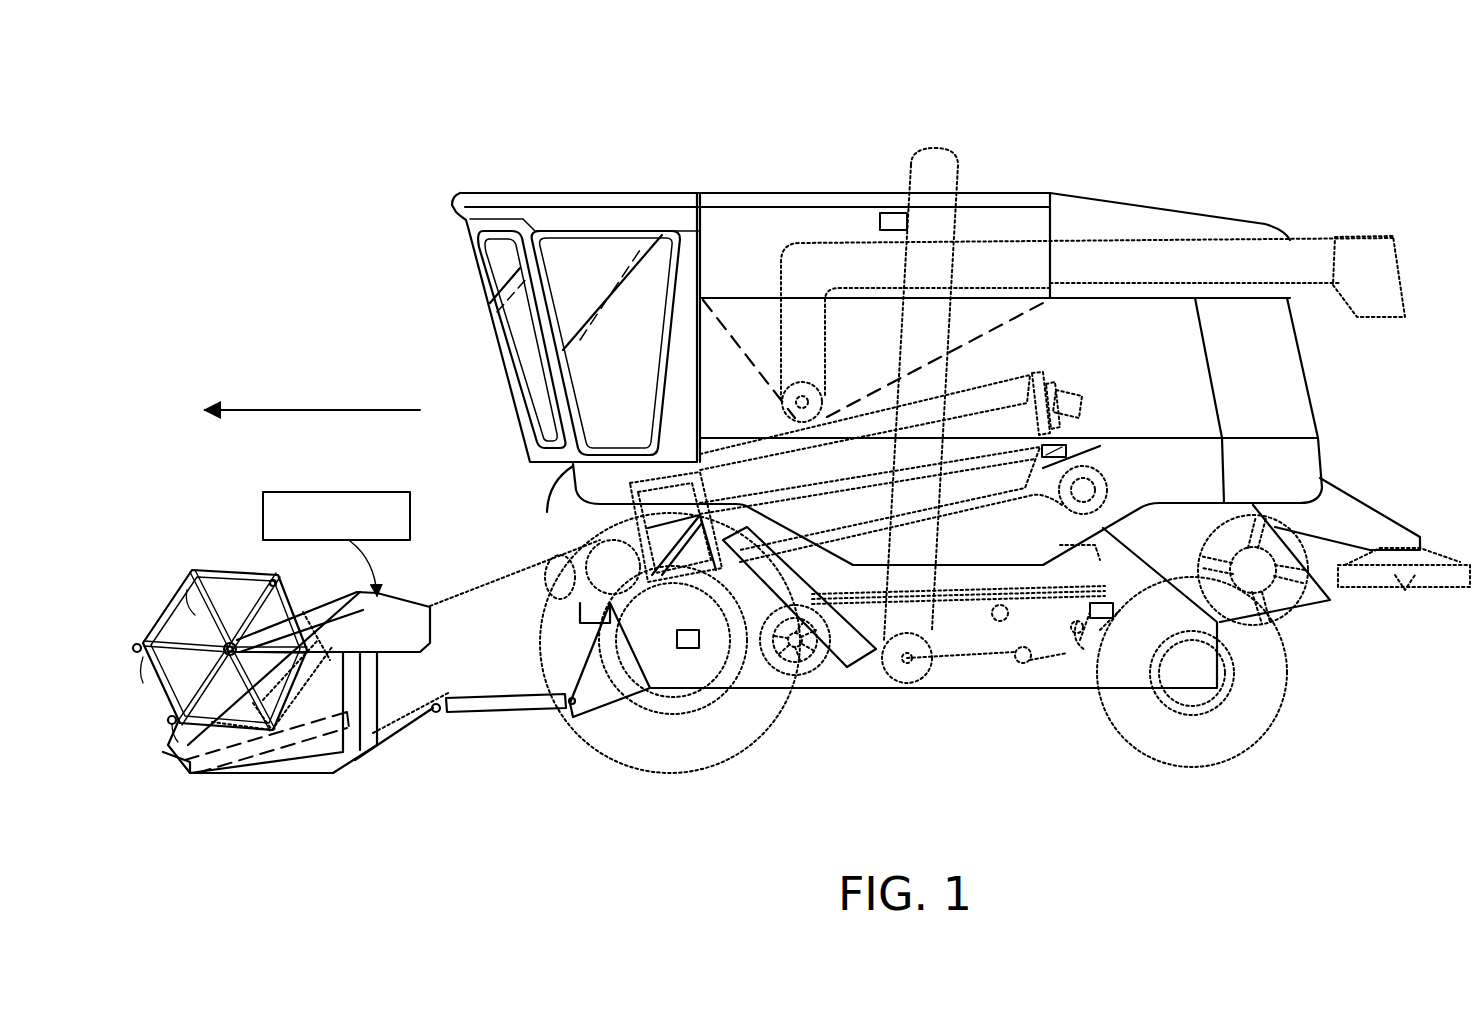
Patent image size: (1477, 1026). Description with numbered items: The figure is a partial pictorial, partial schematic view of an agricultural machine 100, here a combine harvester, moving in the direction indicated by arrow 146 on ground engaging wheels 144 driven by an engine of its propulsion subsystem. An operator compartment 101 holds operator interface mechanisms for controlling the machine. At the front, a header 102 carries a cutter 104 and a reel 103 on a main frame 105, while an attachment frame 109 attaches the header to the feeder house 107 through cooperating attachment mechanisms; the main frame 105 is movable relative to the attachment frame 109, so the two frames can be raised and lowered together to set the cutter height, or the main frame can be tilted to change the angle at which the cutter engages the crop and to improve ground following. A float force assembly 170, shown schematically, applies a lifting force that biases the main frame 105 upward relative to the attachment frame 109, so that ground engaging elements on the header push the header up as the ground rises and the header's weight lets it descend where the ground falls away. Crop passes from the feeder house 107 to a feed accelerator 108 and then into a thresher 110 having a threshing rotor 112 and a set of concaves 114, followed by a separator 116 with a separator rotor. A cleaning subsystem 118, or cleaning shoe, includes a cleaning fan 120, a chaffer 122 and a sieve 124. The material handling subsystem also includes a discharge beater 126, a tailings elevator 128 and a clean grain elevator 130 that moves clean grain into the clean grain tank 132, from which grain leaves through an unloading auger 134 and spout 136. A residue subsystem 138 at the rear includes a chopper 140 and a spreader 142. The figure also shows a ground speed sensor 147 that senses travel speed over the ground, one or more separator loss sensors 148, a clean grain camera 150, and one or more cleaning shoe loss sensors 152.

The agricultural machine 100 is at (1319, 64).
The operator compartment 101 is at (585, 192).
The header 102 is at (245, 570).
The reel 103 is at (166, 604).
The cutter 104 is at (163, 762).
The main frame 105 is at (310, 778).
The feeder house 107 is at (465, 590).
The feed accelerator 108 is at (590, 548).
The attachment frame 109 is at (375, 755).
The thresher 110 is at (976, 376).
The threshing rotor 112 is at (1030, 377).
The set of concaves 114 is at (1100, 446).
The separator 116 is at (966, 510).
The cleaning subsystem 118 is at (1100, 628).
The cleaning fan 120 is at (773, 660).
The chaffer 122 is at (1105, 590).
The sieve 124 is at (1025, 603).
The discharge beater 126 is at (1110, 490).
The tailings elevator 128 is at (850, 667).
The clean grain elevator 130 is at (930, 620).
The clean grain tank 132 is at (740, 290).
The unloading auger 134 is at (822, 397).
The spout 136 is at (1378, 236).
The residue subsystem 138 is at (1380, 498).
The chopper 140 is at (1265, 620).
The spreader 142 is at (1360, 592).
The ground engaging wheels 144 is at (585, 742).
The arrow 146 is at (312, 397).
The ground speed sensor 147 is at (685, 650).
The separator loss sensors 148 is at (1067, 445).
The clean grain camera 150 is at (888, 212).
The cleaning shoe loss sensors 152 is at (1115, 608).
The float force assembly 170 is at (290, 489).